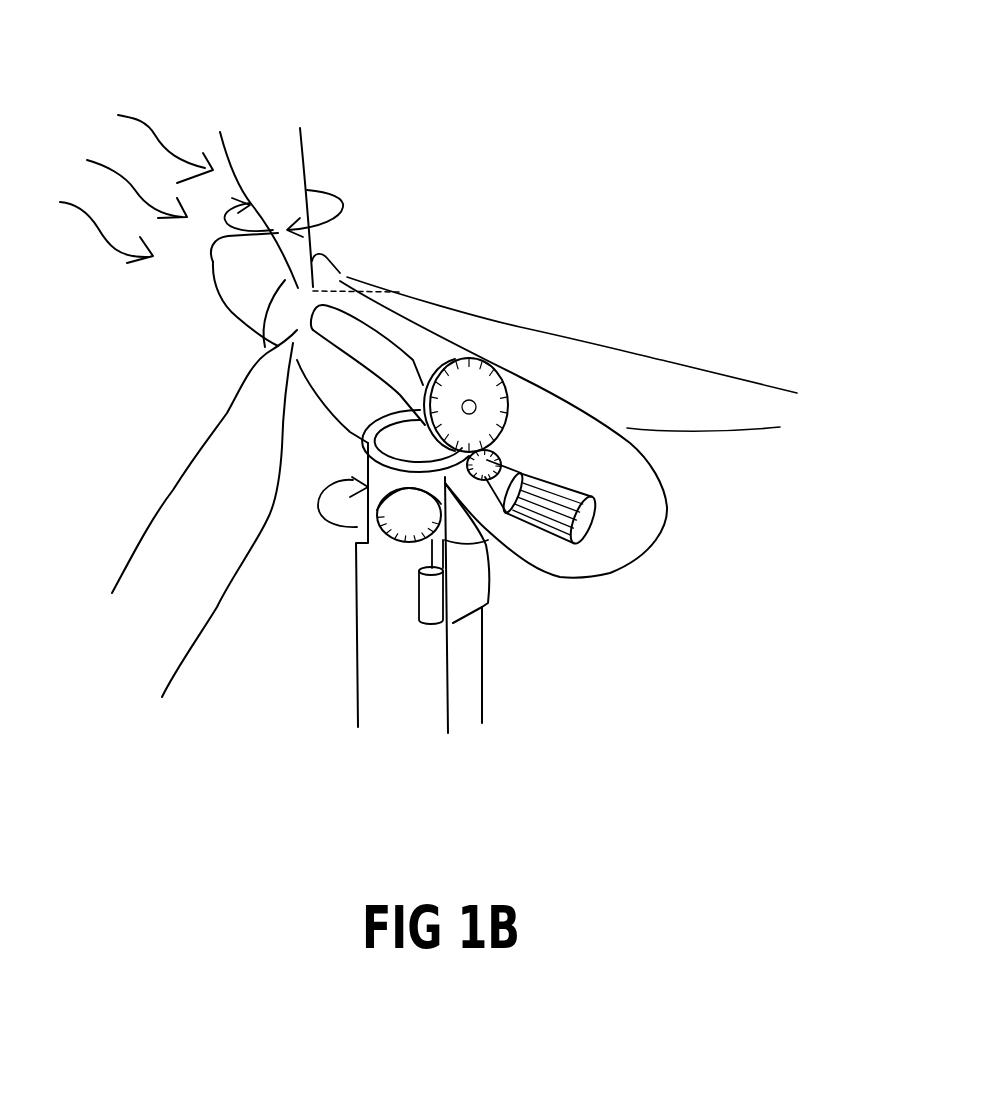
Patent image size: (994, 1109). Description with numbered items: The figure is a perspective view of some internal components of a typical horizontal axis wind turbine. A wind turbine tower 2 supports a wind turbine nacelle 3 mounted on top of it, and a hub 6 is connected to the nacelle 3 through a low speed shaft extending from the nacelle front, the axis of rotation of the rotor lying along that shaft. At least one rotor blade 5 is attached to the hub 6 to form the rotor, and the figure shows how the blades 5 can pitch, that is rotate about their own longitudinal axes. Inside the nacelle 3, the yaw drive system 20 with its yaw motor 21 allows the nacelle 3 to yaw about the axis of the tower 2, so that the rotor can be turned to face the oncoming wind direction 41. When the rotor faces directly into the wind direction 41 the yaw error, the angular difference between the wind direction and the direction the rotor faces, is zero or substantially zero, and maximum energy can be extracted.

The wind turbine tower 2 is at (465, 643).
The wind turbine nacelle 3 is at (647, 510).
The rotor blade 5 is at (645, 382).
The hub 6 is at (237, 282).
The yaw drive system 20 is at (402, 520).
The yaw motor 21 is at (428, 630).
The wind direction 41 is at (126, 187).